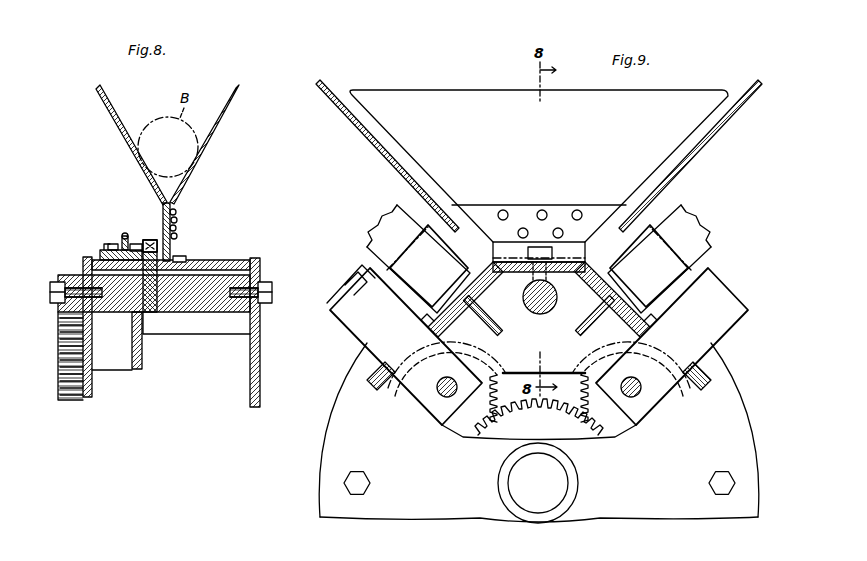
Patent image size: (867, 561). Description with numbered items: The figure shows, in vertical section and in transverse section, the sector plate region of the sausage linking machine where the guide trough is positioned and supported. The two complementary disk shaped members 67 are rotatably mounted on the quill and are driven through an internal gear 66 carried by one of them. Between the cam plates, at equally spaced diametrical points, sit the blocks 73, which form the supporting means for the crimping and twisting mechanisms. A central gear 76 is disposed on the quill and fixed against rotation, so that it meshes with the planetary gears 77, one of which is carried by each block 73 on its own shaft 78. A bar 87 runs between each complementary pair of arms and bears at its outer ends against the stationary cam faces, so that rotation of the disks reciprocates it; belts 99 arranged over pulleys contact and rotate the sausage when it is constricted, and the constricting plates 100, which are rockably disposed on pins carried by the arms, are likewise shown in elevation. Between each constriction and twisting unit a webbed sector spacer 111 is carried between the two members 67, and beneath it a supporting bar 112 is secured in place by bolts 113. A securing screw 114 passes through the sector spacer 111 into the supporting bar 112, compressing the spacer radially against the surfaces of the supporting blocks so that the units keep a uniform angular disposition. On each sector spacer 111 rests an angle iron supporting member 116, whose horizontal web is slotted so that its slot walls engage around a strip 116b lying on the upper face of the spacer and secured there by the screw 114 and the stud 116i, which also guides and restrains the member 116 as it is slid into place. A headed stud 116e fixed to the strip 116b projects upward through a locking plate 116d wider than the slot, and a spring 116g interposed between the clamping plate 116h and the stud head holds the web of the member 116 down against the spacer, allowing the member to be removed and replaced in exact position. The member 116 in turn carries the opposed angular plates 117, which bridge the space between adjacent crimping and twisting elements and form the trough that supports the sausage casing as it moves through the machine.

In FIG. 8, the internal gear 66 is at (72, 362).
In FIG. 8, the complementary disk shaped members 67 is at (93, 394).
In FIG. 9, the complementary disk shaped members 67 is at (326, 450).
In FIG. 9, the blocks 73 is at (417, 346).
In FIG. 9, the central gear 76 is at (539, 417).
In FIG. 9, the planetary gears 77 is at (529, 397).
In FIG. 9, the shaft 78 is at (636, 377).
In FIG. 9, the bar 87 is at (356, 286).
In FIG. 9, the belts 99 is at (390, 233).
In FIG. 9, the constricting plates 100 is at (726, 125).
In FIG. 8, the webbed sector spacer 111 is at (212, 263).
In FIG. 9, the webbed sector spacer 111 is at (490, 262).
In FIG. 8, the supporting bar 112 is at (200, 312).
In FIG. 9, the supporting bar 112 is at (526, 303).
In FIG. 8, the bolts 113 is at (278, 277).
In FIG. 9, the bolts 113 is at (368, 484).
In FIG. 8, the securing screw 114 is at (150, 242).
In FIG. 9, the securing screw 114 is at (552, 284).
In FIG. 8, the angle iron supporting member 116 is at (178, 221).
In FIG. 9, the angle iron supporting member 116 is at (515, 235).
In FIG. 8, the strip 116b is at (100, 254).
In FIG. 8, the locking strip or plate 116d is at (110, 250).
In FIG. 8, the headed stud 116e is at (124, 238).
In FIG. 8, the spring 116g is at (132, 250).
In FIG. 8, the clamping plate 116h is at (118, 250).
In FIG. 8, the guide and restraining stud 116i is at (186, 257).
In FIG. 8, the angular plates 117 is at (108, 111).
In FIG. 9, the angular plates 117 is at (522, 161).